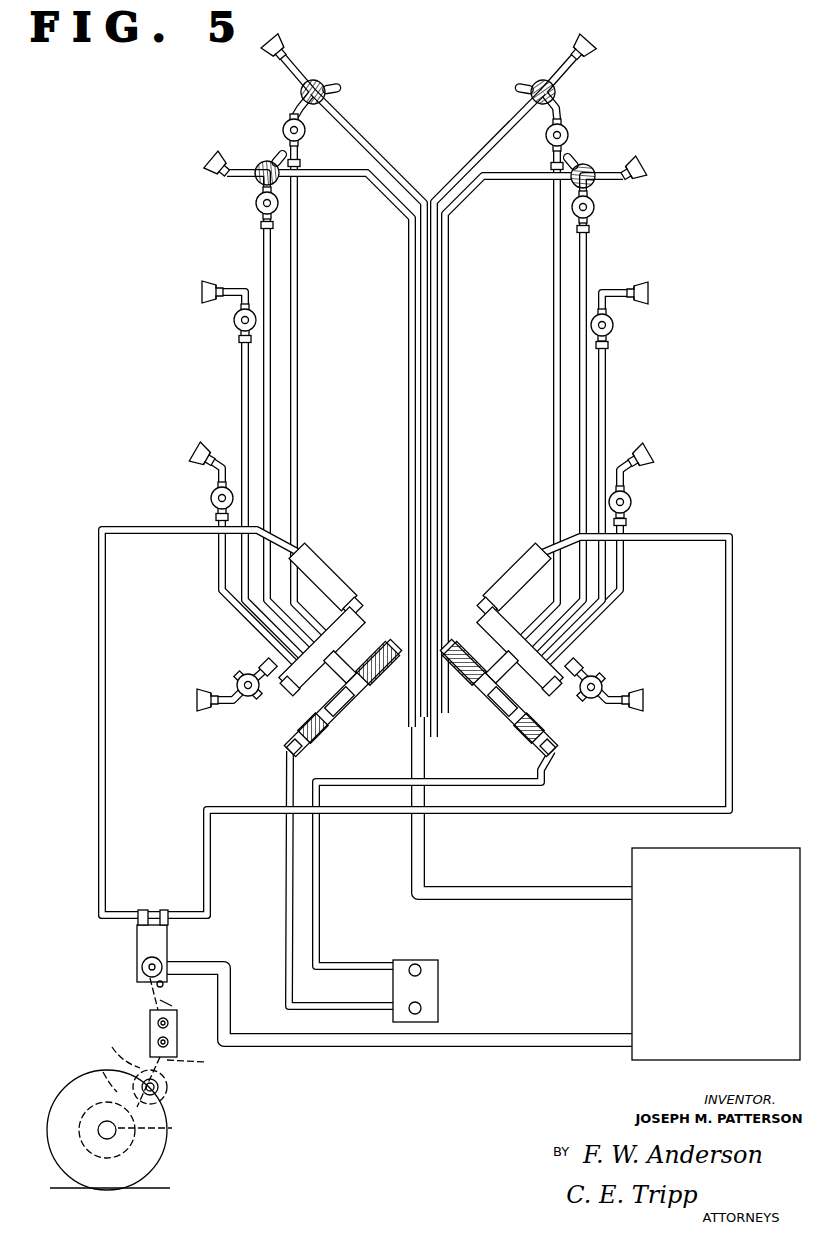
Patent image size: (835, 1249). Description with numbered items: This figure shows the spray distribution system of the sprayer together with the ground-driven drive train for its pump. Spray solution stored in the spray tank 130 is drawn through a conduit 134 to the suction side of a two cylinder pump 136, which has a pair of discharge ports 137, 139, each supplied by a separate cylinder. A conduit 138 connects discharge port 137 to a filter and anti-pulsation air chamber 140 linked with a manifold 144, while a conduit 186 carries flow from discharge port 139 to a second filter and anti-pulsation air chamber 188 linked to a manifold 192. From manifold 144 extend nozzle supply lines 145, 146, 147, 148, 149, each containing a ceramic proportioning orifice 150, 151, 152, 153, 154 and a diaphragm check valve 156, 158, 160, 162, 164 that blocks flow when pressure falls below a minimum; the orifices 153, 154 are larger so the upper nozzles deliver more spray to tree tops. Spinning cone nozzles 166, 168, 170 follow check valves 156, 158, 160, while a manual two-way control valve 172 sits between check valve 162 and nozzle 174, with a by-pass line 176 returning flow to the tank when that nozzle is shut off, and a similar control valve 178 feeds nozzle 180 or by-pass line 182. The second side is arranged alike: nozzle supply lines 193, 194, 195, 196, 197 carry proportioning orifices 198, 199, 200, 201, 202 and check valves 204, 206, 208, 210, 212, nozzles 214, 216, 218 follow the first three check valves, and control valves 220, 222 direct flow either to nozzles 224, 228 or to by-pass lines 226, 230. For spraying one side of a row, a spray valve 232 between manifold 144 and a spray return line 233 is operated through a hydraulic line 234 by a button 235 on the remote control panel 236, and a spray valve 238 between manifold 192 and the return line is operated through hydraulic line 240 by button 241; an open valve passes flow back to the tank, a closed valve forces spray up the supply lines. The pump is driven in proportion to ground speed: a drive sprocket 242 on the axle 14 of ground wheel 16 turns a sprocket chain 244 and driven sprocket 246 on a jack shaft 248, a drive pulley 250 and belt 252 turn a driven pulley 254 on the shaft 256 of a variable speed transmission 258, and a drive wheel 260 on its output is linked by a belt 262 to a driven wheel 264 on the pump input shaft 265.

The axle 14 is at (105, 1129).
The ground wheel 16 is at (60, 1165).
The spray tank 130 is at (711, 960).
The conduit 134 is at (492, 1042).
The two cylinder pump 136 is at (137, 936).
The discharge port 137 is at (143, 910).
The conduit 138 is at (104, 760).
The discharge port 139 is at (162, 910).
The filter and anti-pulsation air chamber 140 is at (313, 560).
The manifold 144 is at (346, 624).
The nozzle supply line 145 is at (288, 692).
The nozzle supply line 146 is at (238, 617).
The nozzle supply line 147 is at (238, 574).
The nozzle supply line 148 is at (270, 483).
The nozzle supply line 149 is at (297, 458).
The proportioning orifice 150 is at (263, 665).
The proportioning orifice 151 is at (216, 516).
The proportioning orifice 152 is at (239, 340).
The proportioning orifice 153 is at (256, 225).
The proportioning orifice 154 is at (300, 164).
The check valve 156 is at (239, 681).
The check valve 158 is at (211, 497).
The check valve 160 is at (234, 320).
The check valve 162 is at (256, 201).
The check valve 164 is at (287, 124).
The nozzle 166 is at (214, 713).
The nozzle 168 is at (212, 452).
The nozzle 170 is at (233, 290).
The manual two-way control valve 172 is at (258, 163).
The nozzle 174 is at (203, 170).
The by-pass line 176 is at (392, 201).
The manual two-way control valve 178 is at (325, 84).
The nozzle 180 is at (268, 62).
The by-pass line 182 is at (410, 268).
The conduit 186 is at (226, 806).
The filter and anti-pulsation air chamber 188 is at (516, 556).
The manifold 192 is at (497, 626).
The nozzle supply line 193 is at (565, 694).
The nozzle supply line 194 is at (614, 604).
The nozzle supply line 195 is at (606, 566).
The nozzle supply line 196 is at (579, 419).
The nozzle supply line 197 is at (553, 393).
The proportioning orifice 198 is at (590, 675).
The proportioning orifice 199 is at (631, 521).
The proportioning orifice 200 is at (609, 346).
The proportioning orifice 201 is at (594, 230).
The proportioning orifice 202 is at (551, 167).
The check valve 204 is at (604, 679).
The check valve 206 is at (632, 499).
The check valve 208 is at (615, 326).
The check valve 210 is at (596, 208).
The check valve 212 is at (568, 130).
The nozzle 214 is at (636, 714).
The nozzle 216 is at (648, 457).
The nozzle 218 is at (633, 291).
The manual two-way control valve 220 is at (592, 166).
The manual two-way control valve 222 is at (532, 83).
The nozzle 224 is at (648, 177).
The by-pass line 226 is at (466, 192).
The nozzle 228 is at (589, 60).
The by-pass line 230 is at (446, 268).
The spray valve 232 is at (372, 722).
The spray return line 233 is at (425, 828).
The hydraulic line 234 is at (286, 846).
The button 235 is at (422, 1009).
The remote control panel 236 is at (439, 966).
The spray valve 238 is at (470, 722).
The hydraulic line 240 is at (320, 840).
The button 241 is at (418, 962).
The drive sprocket 242 is at (160, 1130).
The sprocket chain 244 is at (112, 1082).
The driven sprocket 246 is at (165, 1108).
The jack shaft 248 is at (160, 1091).
The drive pulley 250 is at (170, 1083).
The belt 252 is at (132, 1066).
The driven pulley 254 is at (200, 1062).
The shaft 256 is at (150, 1040).
The variable speed transmission 258 is at (150, 1020).
The drive wheel 260 is at (170, 1005).
The belt 262 is at (140, 997).
The driven wheel 264 is at (164, 986).
The input shaft 265 is at (141, 964).